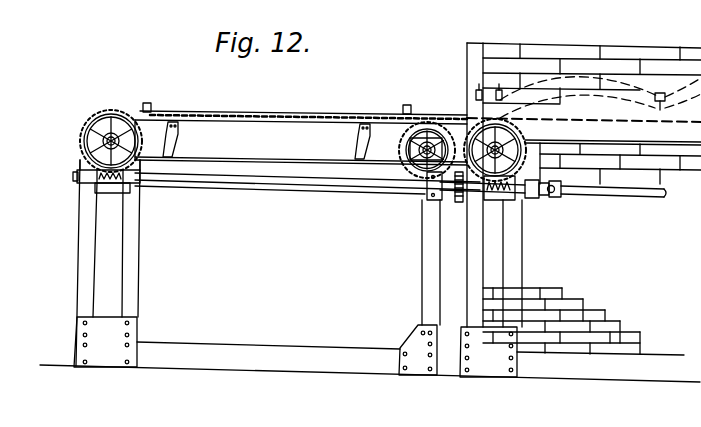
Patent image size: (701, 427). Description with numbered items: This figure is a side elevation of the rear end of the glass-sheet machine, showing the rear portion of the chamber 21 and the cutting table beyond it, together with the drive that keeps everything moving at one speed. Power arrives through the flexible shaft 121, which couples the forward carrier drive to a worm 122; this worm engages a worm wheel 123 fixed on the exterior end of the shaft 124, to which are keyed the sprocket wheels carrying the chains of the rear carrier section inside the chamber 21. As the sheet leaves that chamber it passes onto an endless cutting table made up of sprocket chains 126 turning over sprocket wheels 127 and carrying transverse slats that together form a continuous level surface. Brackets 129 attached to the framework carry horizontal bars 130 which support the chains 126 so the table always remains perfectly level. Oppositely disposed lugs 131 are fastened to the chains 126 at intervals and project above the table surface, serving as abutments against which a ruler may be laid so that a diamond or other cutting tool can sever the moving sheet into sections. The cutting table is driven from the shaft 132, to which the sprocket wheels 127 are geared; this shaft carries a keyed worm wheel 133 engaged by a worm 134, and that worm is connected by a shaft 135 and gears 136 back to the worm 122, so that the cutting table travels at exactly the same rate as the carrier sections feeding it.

The chamber 21 is at (559, 52).
The flexible shaft 121 is at (655, 191).
The worm 122 is at (512, 203).
The worm wheel 123 is at (477, 128).
The shaft 124 is at (527, 140).
The sprocket chains 126 is at (305, 118).
The sprocket wheels 127 is at (414, 162).
The brackets 129 is at (174, 135).
The horizontal bars 130 is at (273, 125).
The lugs 131 is at (148, 105).
The shaft 132 is at (110, 116).
The worm wheel 133 is at (82, 133).
The worm 134 is at (105, 185).
The shaft 135 is at (272, 184).
The gears 136 is at (456, 199).